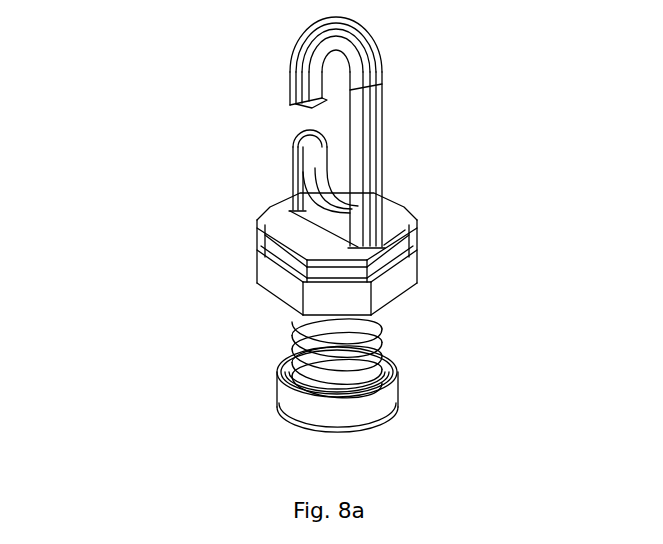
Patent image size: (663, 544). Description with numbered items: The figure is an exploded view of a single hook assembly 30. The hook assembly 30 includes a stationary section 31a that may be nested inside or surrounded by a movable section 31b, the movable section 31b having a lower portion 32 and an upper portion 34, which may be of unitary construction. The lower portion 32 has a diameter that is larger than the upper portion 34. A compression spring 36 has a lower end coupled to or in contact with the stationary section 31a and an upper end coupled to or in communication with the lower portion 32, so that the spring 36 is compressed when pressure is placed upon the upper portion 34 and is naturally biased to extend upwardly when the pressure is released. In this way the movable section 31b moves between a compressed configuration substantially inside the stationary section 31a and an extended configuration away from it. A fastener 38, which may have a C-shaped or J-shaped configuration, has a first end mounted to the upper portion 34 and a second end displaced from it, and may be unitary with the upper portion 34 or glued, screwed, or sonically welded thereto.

The hook assembly 30 is at (150, 181).
The stationary section 31a is at (397, 392).
The movable section 31b is at (452, 229).
The lower portion 32 is at (272, 285).
The upper portion 34 is at (391, 216).
The compression spring 36 is at (383, 340).
The fastener 38 is at (375, 60).